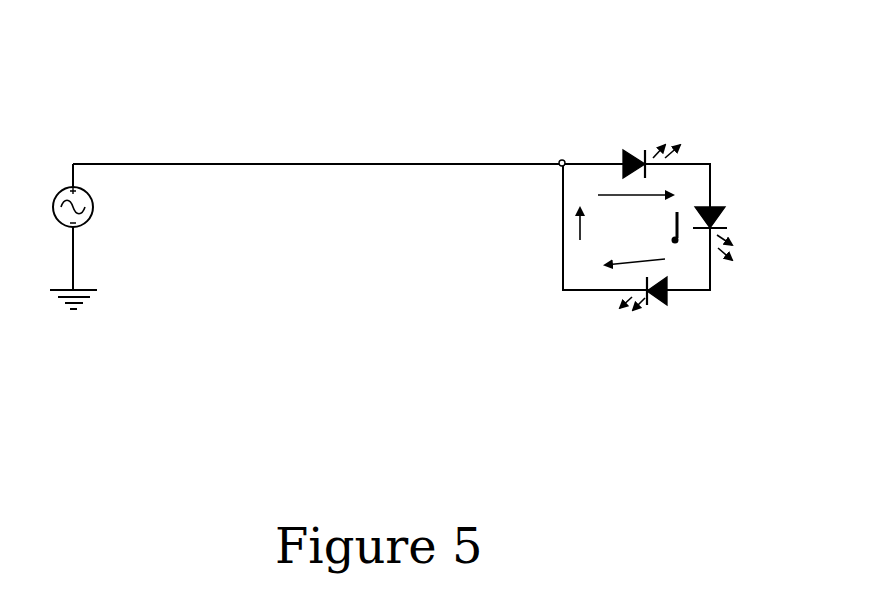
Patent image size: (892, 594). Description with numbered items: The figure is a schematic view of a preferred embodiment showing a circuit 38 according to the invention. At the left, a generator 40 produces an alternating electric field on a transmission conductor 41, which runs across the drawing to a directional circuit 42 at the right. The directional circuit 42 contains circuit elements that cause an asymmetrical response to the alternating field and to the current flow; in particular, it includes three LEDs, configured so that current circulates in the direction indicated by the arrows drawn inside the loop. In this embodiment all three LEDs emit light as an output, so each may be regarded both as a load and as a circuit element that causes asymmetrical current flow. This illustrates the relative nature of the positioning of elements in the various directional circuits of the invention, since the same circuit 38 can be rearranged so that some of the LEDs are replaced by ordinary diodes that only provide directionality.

The circuit 38 is at (368, 95).
The generator 40 is at (75, 162).
The conductor 41 is at (324, 165).
The directional circuit 42 is at (557, 247).